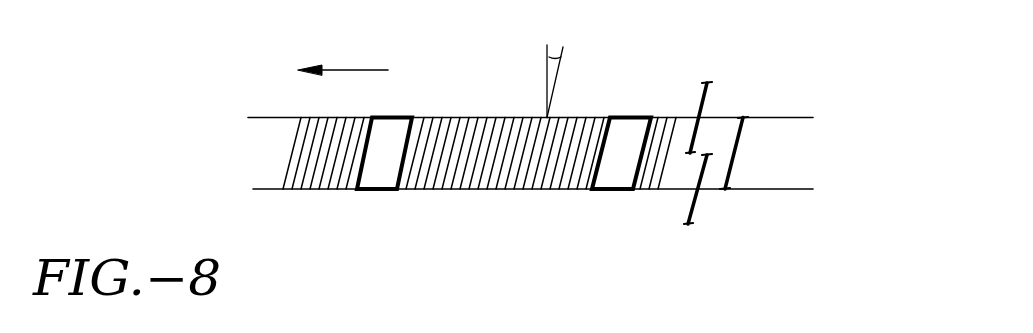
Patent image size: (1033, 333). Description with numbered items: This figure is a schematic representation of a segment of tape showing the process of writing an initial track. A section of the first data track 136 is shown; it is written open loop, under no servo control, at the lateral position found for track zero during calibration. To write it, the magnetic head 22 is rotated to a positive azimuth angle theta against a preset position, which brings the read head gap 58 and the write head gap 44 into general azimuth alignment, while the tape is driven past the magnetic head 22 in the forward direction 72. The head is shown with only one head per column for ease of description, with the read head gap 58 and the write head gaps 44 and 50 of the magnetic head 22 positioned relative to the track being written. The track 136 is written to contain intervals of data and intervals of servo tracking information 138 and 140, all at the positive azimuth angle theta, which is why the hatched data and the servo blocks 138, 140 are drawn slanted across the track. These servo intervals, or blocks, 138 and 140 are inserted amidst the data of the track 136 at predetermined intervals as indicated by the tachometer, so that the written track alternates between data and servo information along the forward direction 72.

The magnetic head 22 is at (781, 41).
The first data track 136 is at (482, 190).
The servo tracking information interval 138 is at (383, 190).
The servo tracking information interval 140 is at (619, 190).
The forward direction 72 is at (360, 70).
The write head gap 50 is at (706, 80).
The read head gap 58 is at (688, 227).
The write head gap 44 is at (724, 192).
The positive azimuth angle theta is at (554, 55).